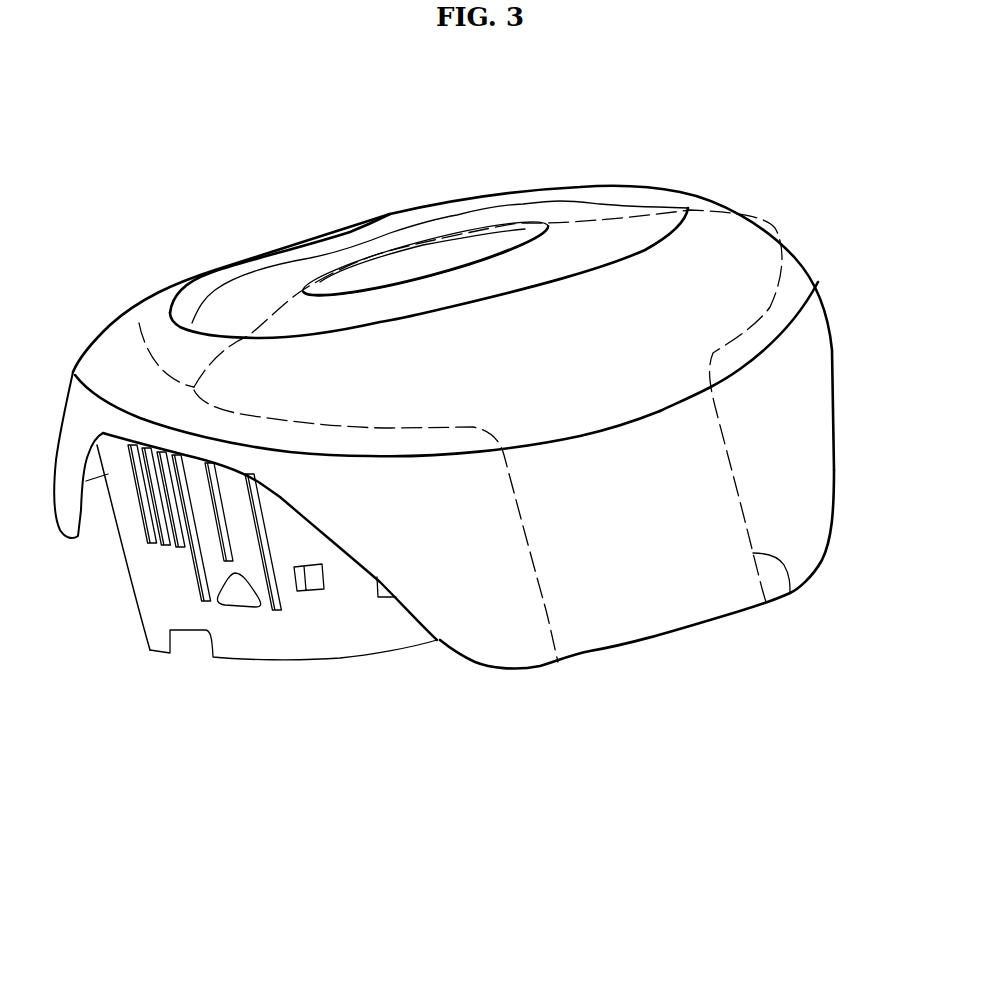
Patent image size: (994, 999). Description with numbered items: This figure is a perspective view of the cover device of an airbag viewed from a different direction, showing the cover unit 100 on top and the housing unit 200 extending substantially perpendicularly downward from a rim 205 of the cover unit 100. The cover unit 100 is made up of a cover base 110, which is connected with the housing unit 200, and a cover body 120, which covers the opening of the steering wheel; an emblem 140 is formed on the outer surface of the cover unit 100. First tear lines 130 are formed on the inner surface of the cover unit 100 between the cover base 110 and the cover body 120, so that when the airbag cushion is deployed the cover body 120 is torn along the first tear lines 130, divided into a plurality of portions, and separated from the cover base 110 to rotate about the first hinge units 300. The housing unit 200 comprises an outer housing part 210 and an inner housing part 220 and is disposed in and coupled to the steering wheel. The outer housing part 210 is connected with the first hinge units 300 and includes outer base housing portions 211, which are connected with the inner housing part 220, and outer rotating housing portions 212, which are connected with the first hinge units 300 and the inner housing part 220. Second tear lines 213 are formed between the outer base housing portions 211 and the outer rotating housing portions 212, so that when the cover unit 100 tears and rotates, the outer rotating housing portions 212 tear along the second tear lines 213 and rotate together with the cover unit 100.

The cover unit 100 is at (740, 258).
The cover base 110 is at (798, 290).
The cover body 120 is at (637, 312).
The first tear lines 130 is at (623, 217).
The emblem 140 is at (540, 232).
The housing unit 200 is at (263, 758).
The rim 205 is at (760, 360).
The outer housing part 210 is at (471, 628).
The outer base housing portions 211 is at (800, 465).
The outer rotating housing portions 212 is at (627, 600).
The second tear lines 213 is at (790, 593).
The inner housing part 220 is at (265, 632).
The first hinge units 300 is at (620, 398).